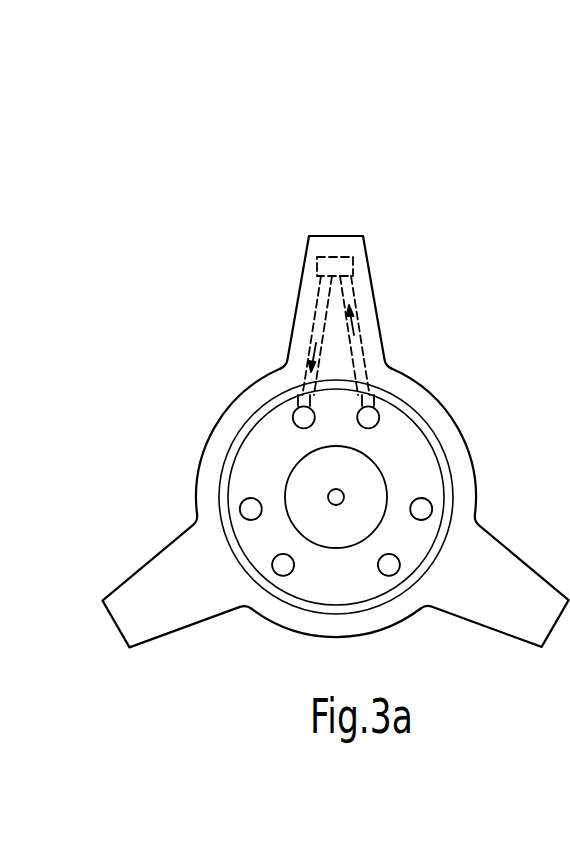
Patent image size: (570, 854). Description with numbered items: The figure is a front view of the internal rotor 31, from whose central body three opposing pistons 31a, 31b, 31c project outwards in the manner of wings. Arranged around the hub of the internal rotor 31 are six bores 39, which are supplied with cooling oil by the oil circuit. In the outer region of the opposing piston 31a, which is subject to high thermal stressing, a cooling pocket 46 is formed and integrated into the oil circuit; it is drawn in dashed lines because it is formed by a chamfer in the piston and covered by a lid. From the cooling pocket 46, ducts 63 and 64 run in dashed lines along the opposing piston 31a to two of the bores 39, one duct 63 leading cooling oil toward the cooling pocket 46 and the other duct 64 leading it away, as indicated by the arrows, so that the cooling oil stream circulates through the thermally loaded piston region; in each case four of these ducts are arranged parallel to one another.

The internal rotor 31 is at (408, 352).
The opposing piston 31a is at (330, 243).
The opposing piston 31b is at (512, 612).
The opposing piston 31c is at (148, 620).
The bores 39 is at (427, 513).
The cooling pocket 46 is at (350, 254).
The duct 63 is at (355, 332).
The duct 64 is at (315, 335).